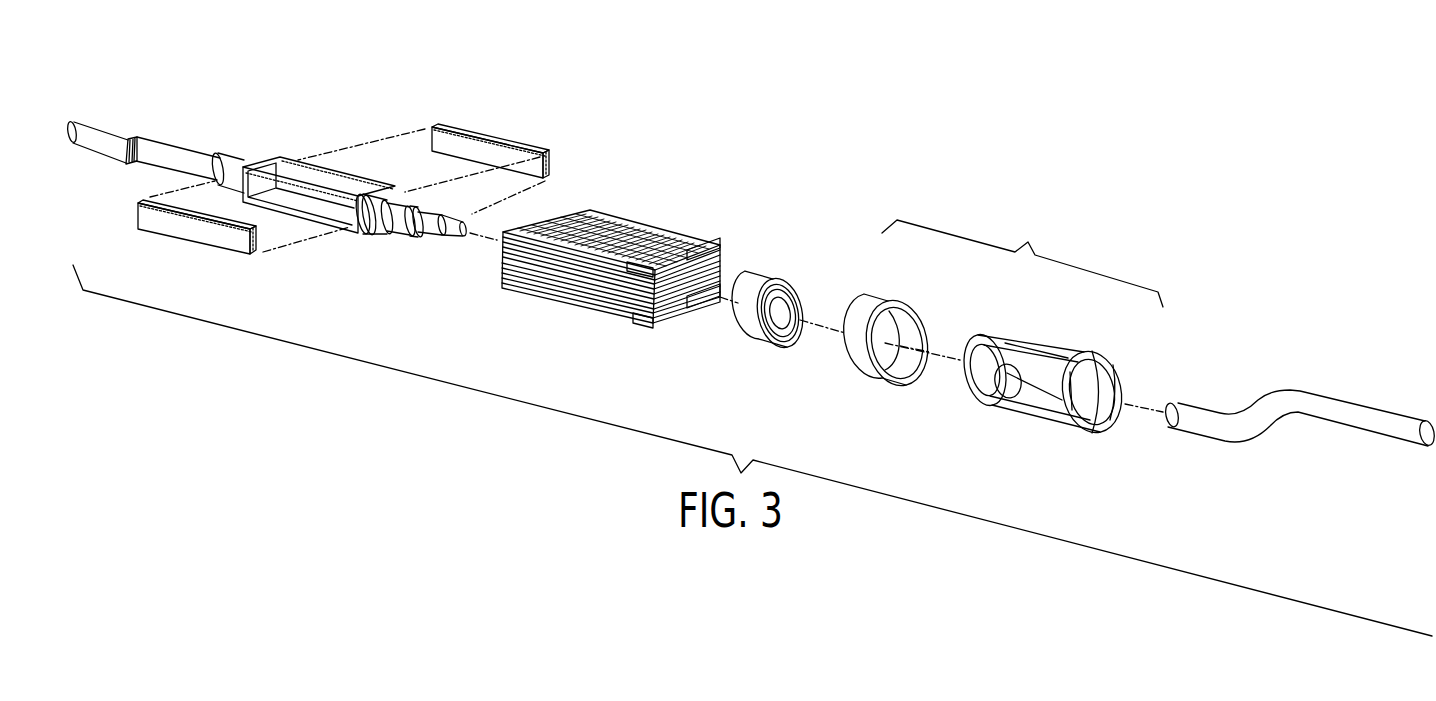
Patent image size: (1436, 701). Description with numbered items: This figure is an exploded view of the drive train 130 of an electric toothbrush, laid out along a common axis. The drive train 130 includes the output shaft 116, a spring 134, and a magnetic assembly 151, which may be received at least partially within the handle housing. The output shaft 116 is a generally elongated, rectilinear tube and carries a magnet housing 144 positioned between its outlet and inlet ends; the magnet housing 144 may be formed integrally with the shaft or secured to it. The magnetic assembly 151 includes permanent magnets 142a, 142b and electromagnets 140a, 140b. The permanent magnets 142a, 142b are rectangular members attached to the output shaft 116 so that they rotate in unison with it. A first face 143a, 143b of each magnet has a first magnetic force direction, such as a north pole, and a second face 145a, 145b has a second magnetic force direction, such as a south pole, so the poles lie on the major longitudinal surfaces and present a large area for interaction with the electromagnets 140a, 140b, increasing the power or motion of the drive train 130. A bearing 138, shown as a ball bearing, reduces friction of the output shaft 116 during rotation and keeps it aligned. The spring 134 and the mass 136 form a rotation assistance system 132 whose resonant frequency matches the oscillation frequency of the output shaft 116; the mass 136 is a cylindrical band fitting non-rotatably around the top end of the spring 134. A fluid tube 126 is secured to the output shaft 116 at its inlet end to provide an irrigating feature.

The output shaft 116 is at (165, 148).
The fluid tube 126 is at (1245, 460).
The drive train 130 is at (637, 270).
The rotation assistance system 132 is at (1022, 258).
The spring 134 is at (1047, 350).
The mass 136 is at (887, 300).
The bearing 138 is at (770, 277).
The electromagnet 140a is at (643, 327).
The electromagnet 140b is at (710, 305).
The permanent magnet 142a is at (237, 250).
The permanent magnet 142b is at (550, 168).
The first face 143a is at (183, 237).
The first face 143b is at (462, 140).
The magnet housing 144 is at (360, 183).
The second face 145a is at (203, 213).
The second face 145b is at (497, 138).
The magnetic assembly 151 is at (248, 132).